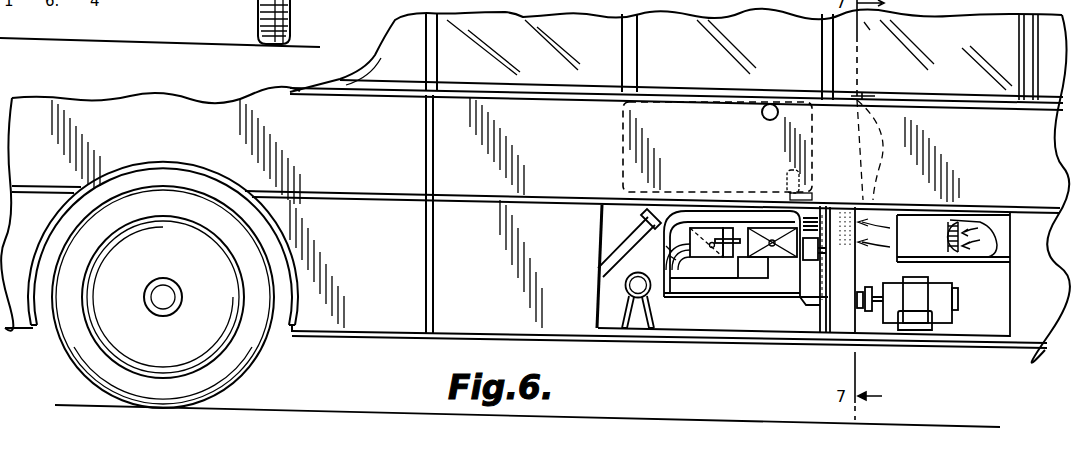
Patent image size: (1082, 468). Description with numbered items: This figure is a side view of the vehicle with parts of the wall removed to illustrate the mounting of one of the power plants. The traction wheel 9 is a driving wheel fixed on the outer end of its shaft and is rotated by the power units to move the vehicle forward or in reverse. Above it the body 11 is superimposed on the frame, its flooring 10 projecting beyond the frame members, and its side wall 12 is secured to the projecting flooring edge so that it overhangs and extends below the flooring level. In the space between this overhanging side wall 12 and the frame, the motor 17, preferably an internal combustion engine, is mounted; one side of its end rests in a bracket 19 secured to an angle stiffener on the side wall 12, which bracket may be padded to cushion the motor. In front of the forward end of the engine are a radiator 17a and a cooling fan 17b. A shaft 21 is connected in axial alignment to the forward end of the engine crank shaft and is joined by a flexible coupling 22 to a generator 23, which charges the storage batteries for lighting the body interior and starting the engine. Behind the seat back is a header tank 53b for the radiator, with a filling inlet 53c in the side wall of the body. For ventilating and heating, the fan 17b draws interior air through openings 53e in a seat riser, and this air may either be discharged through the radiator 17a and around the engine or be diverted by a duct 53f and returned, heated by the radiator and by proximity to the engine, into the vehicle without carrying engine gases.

The traction wheel 9 is at (200, 332).
The flooring 10 is at (1008, 258).
The body 11 is at (375, 316).
The side wall 12 is at (680, 186).
The motor 17 is at (738, 288).
The radiator 17a is at (840, 322).
The cooling fan 17b is at (815, 303).
The bracket 19 is at (652, 298).
The shaft 21 is at (855, 330).
The flexible coupling 22 is at (864, 287).
The generator 23 is at (920, 298).
The header tank 53b is at (622, 156).
The filling inlet 53c is at (772, 103).
The openings 53e is at (955, 225).
The duct 53f is at (760, 200).